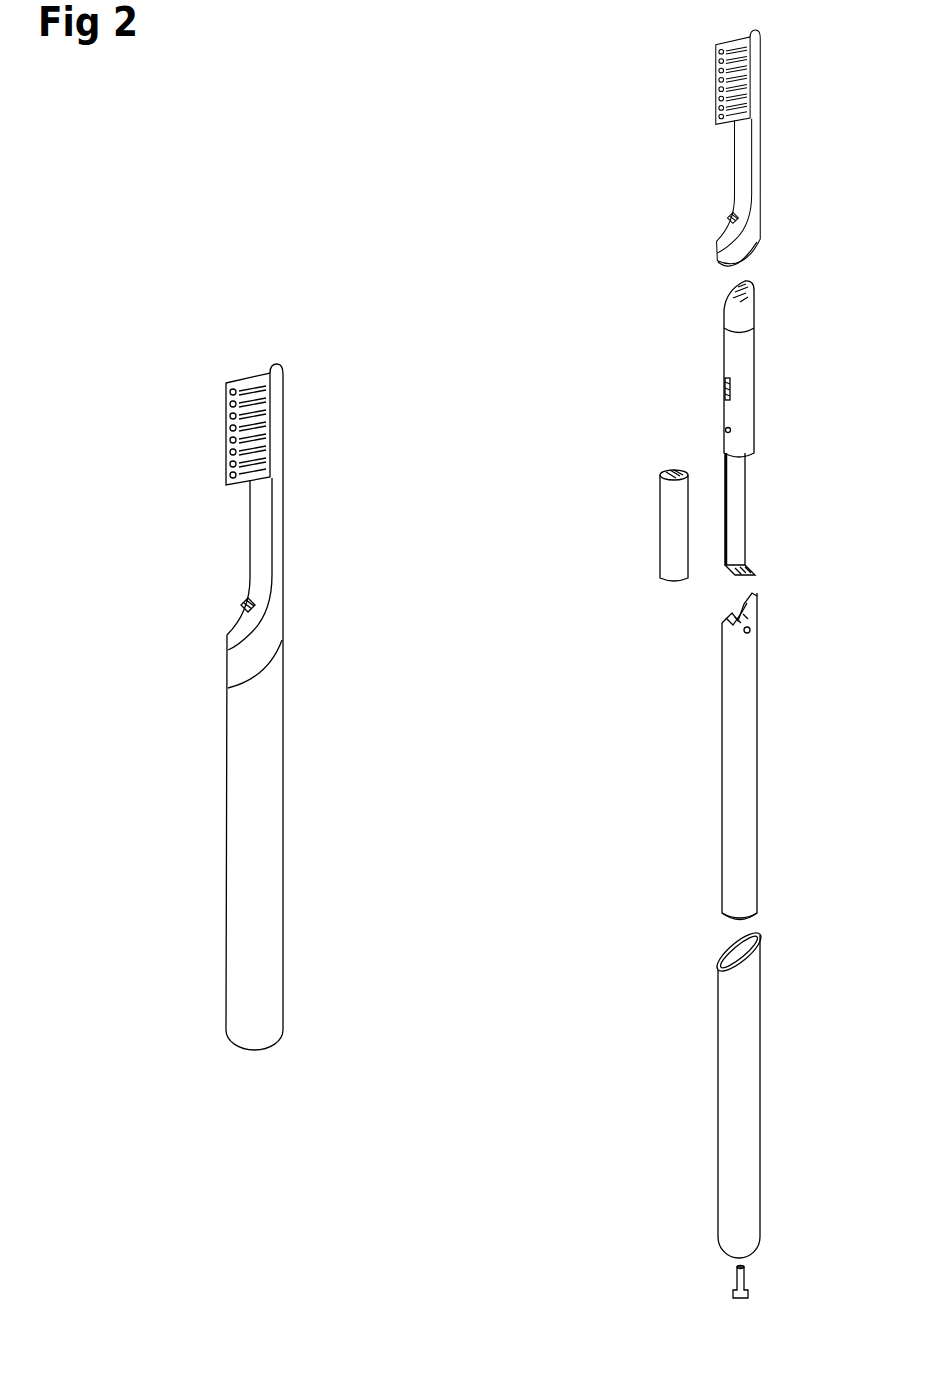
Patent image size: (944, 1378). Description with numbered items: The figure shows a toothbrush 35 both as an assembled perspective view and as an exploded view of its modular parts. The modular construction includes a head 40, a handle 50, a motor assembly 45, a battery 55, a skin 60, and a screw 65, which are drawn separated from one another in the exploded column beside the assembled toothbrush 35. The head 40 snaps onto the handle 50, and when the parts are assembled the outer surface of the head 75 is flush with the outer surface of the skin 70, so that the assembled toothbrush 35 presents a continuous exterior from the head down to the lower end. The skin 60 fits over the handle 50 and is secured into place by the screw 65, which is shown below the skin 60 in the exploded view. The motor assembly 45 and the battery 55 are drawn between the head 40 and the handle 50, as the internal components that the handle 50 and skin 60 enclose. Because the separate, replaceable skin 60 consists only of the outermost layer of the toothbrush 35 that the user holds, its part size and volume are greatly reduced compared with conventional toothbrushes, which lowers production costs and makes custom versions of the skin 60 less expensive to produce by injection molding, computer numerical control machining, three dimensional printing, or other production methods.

The toothbrush 35 is at (262, 705).
The head 40 is at (745, 178).
The motor assembly 45 is at (742, 428).
The handle 50 is at (742, 728).
The battery 55 is at (665, 527).
The skin 60 is at (745, 1165).
The screw 65 is at (748, 1273).
The outer surface of the skin 70 is at (717, 988).
The outer surface of the head 75 is at (718, 262).